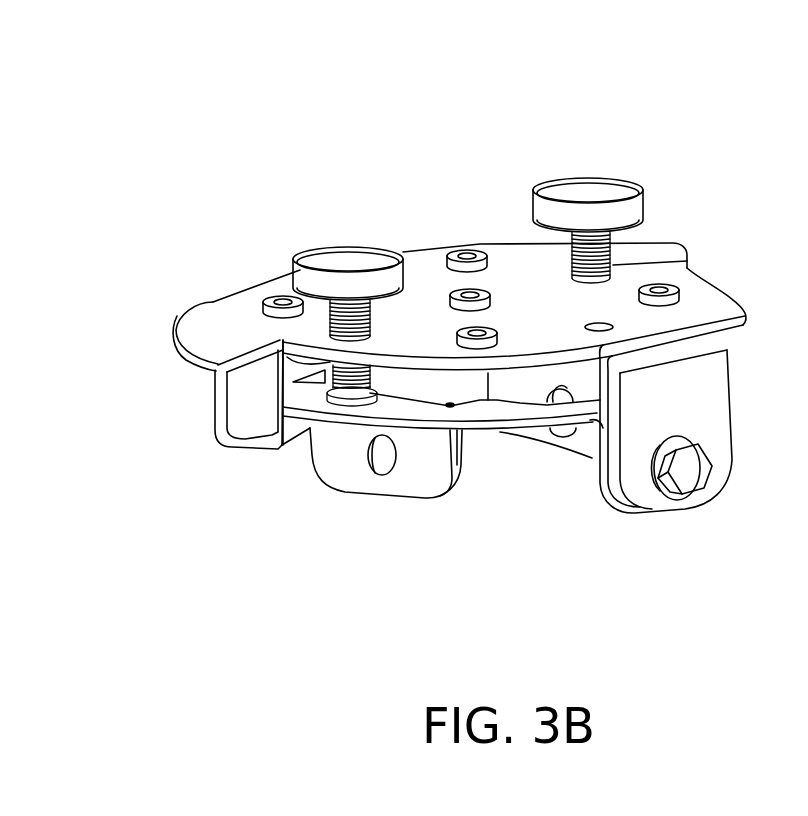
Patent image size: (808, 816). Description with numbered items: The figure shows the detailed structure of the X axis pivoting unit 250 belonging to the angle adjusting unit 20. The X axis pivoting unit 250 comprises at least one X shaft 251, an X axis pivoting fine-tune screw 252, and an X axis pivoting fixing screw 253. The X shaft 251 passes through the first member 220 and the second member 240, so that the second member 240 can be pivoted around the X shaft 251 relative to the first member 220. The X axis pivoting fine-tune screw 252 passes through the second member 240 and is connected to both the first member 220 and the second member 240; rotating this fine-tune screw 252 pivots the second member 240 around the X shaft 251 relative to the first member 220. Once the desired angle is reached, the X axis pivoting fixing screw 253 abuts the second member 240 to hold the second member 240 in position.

The angle adjusting unit 20 is at (133, 50).
The first member 220 is at (213, 313).
The second member 240 is at (416, 467).
The X axis pivoting unit 250 is at (770, 79).
The X shaft 251 is at (695, 472).
The X axis pivoting fine-tune screw 252 is at (347, 254).
The X axis pivoting fixing screw 253 is at (590, 187).